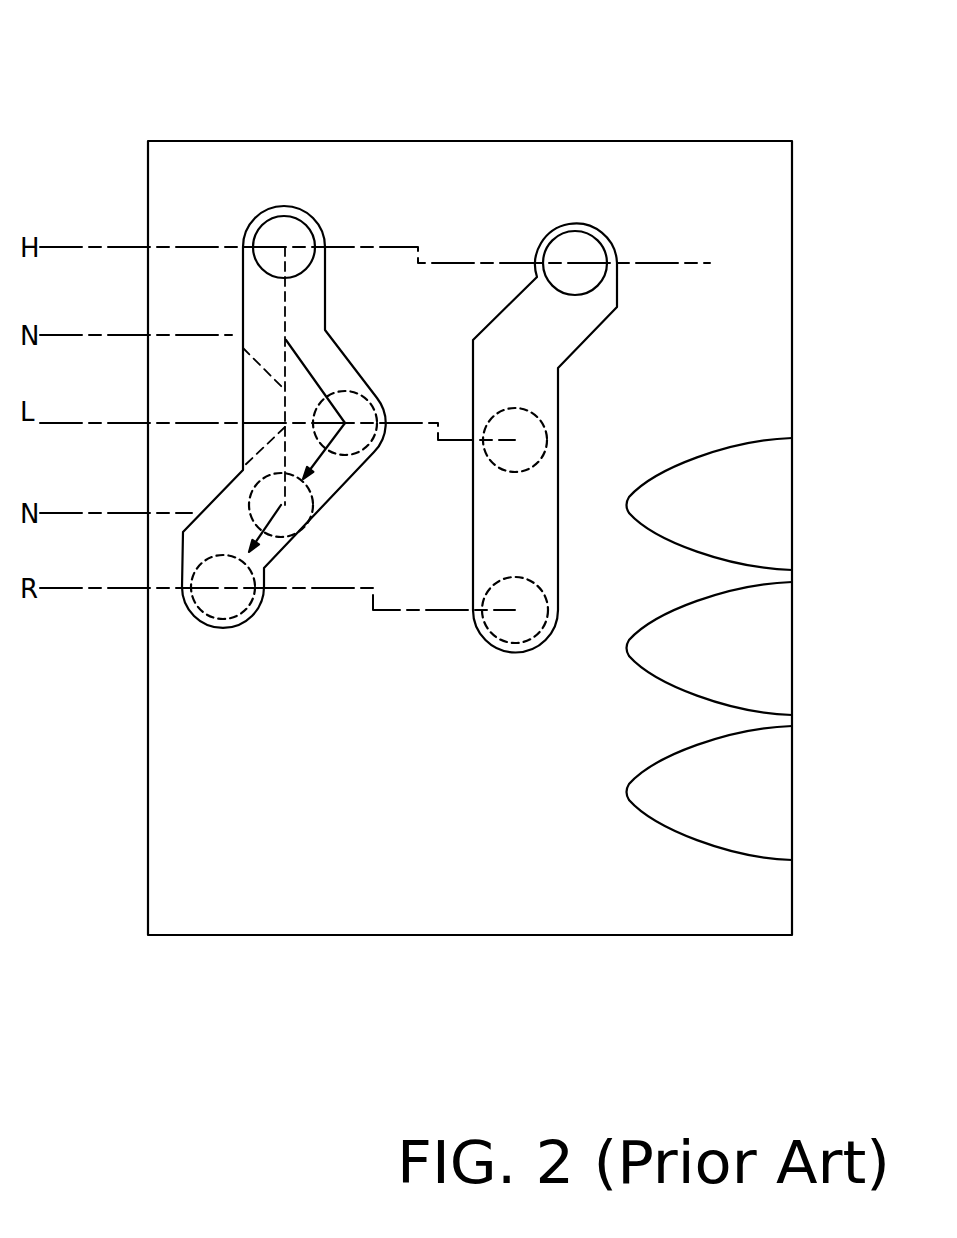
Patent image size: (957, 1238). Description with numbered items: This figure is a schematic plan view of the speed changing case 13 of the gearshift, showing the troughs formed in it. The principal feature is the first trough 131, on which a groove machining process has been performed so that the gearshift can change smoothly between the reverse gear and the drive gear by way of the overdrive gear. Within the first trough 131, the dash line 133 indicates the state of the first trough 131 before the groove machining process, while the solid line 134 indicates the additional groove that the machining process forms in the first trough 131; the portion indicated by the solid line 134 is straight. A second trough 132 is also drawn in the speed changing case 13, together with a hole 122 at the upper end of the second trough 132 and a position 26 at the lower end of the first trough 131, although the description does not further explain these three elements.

The speed changing case 13 is at (640, 177).
The mounting hole 122 is at (578, 255).
The first trough 131 is at (240, 623).
The second conductive slot 132 is at (537, 435).
The dash line 133 is at (299, 403).
The solid line 134 is at (255, 398).
The R terminal hole 26 is at (213, 597).